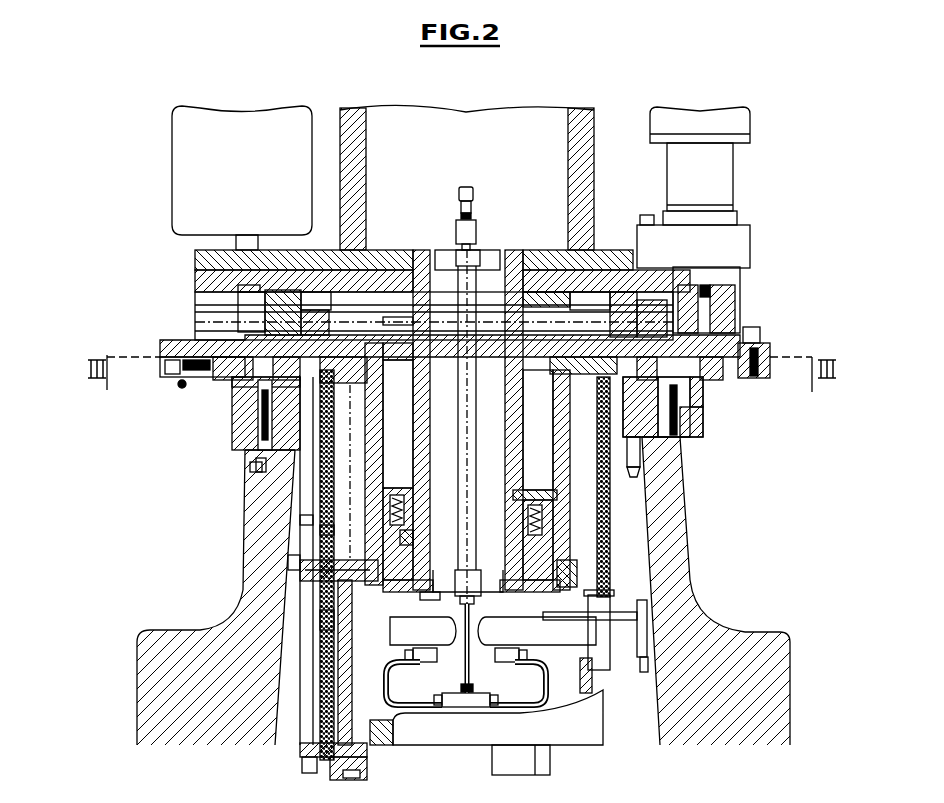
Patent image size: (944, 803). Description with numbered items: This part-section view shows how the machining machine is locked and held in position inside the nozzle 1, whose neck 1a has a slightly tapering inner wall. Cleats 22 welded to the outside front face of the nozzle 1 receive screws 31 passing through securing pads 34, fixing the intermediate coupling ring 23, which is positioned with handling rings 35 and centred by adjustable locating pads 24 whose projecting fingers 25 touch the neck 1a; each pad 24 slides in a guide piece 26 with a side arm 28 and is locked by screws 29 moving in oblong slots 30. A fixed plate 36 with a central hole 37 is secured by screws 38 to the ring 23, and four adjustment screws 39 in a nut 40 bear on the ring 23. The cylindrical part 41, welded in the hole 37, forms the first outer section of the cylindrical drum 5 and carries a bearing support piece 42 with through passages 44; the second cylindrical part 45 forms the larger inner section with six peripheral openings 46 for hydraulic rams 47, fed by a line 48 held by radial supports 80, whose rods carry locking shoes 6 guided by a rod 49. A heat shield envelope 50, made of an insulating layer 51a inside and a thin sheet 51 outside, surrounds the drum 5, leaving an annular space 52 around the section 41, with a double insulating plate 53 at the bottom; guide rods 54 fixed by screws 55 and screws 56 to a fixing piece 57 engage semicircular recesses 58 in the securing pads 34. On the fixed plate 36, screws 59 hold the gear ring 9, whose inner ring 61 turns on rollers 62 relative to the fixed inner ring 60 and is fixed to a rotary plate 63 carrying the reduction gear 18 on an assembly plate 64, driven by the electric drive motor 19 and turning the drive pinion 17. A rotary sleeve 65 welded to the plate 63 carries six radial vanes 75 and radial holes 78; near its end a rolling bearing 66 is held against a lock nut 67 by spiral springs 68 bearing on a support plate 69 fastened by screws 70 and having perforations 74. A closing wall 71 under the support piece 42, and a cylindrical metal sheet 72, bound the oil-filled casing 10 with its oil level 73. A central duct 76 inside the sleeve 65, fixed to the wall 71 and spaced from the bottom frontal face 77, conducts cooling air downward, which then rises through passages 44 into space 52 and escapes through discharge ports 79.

The nozzle 1 is at (718, 690).
The neck 1a is at (665, 571).
The cylindrical drum 5 is at (458, 730).
The locking shoes 6 is at (650, 655).
The gear ring 9 is at (300, 267).
The casing 10 is at (188, 320).
The drive pinion 17 is at (733, 278).
The reduction gear 18 is at (737, 184).
The electric drive motor 19 is at (192, 172).
The cleats 22 is at (247, 437).
The intermediate coupling ring 23 is at (232, 385).
The adjustable locating pads 24 is at (647, 447).
The projecting finger 25 is at (637, 458).
The guide piece 26 is at (702, 394).
The side arm 28 is at (700, 438).
The screws 29 is at (685, 410).
The oblong slots 30 is at (690, 414).
The screws 31 is at (258, 465).
The securing pads 34 is at (252, 405).
The handling rings 35 is at (184, 388).
The fixed plate 36 is at (723, 340).
The central hole 37 is at (400, 323).
The screws 38 is at (760, 330).
The adjustment screws 39 is at (175, 370).
The nut 40 is at (197, 356).
The cylindrical part 41 is at (558, 465).
The bearing support piece 42 is at (552, 517).
The through passages 44 is at (362, 574).
The second cylindrical part 45 is at (341, 652).
The peripheral openings 46 is at (581, 676).
The hydraulic rams 47 is at (552, 634).
The line 48 is at (466, 430).
The rod 49 is at (626, 603).
The heat shield envelope 50 is at (322, 620).
The thin sheet 51 is at (347, 500).
The layer of thermally insulating material 51a is at (327, 530).
The annular space 52 is at (310, 522).
The double insulating plate 53 is at (397, 728).
The guide rods 54 is at (313, 520).
The screws 55 is at (297, 563).
The screws 56 is at (300, 749).
The fixing piece 57 is at (305, 768).
The semicircular recesses 58 is at (254, 470).
The screws 59 is at (245, 268).
The fixed inner ring 60 is at (285, 268).
The inner ring 61 is at (316, 262).
The rollers 62 is at (322, 268).
The rotary plate 63 is at (215, 284).
The assembly plate 64 is at (205, 262).
The rotary sleeve 65 is at (418, 405).
The rolling bearing 66 is at (420, 540).
The lock nut 67 is at (432, 594).
The spiral springs 68 is at (407, 510).
The support plate 69 is at (380, 492).
The screws 70 is at (390, 590).
The closing wall 71 is at (507, 588).
The cylindrical metal sheet 72 is at (192, 325).
The oil level 73 is at (217, 310).
The perforations 74 is at (522, 491).
The radial vanes 75 is at (520, 393).
The central duct 76 is at (432, 256).
The bottom frontal face 77 is at (512, 558).
The radial holes 78 is at (420, 354).
The discharge ports 79 is at (603, 428).
The radial supports 80 is at (487, 258).